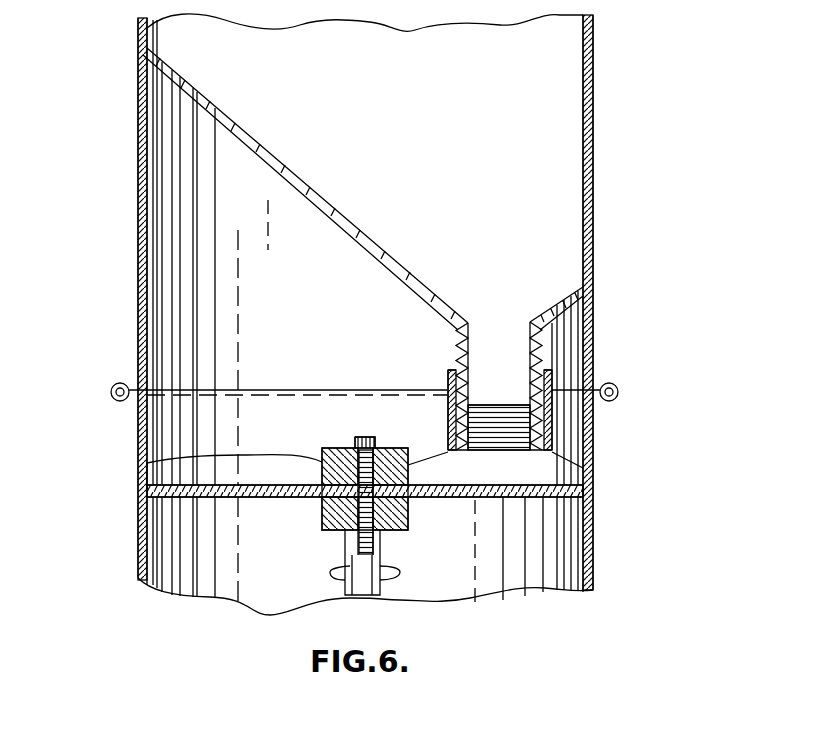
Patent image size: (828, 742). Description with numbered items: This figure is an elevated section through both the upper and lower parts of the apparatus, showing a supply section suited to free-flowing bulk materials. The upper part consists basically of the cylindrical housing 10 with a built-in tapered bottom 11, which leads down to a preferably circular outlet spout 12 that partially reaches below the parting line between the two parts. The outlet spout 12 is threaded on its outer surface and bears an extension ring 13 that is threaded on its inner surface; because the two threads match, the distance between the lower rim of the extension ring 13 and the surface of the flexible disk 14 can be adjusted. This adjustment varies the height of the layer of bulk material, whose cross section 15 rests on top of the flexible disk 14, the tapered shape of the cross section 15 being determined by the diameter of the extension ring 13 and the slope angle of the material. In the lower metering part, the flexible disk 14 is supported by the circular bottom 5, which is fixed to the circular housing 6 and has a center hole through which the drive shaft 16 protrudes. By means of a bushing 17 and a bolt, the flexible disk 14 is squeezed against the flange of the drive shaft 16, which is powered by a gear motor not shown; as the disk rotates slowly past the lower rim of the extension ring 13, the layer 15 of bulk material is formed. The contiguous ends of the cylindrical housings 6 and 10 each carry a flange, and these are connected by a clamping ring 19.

The circular bottom 5 is at (140, 492).
The circular housing 6 is at (135, 505).
The cylindrical housing 10 is at (593, 117).
The tapered bottom 11 is at (198, 103).
The outlet spout 12 is at (552, 352).
The extension ring 13 is at (583, 357).
The flexible disk 14 is at (143, 462).
The cross section of bulk material layer 15 is at (247, 458).
The drive shaft 16 is at (345, 565).
The bushing 17 is at (335, 448).
The clamping ring 19 is at (618, 395).